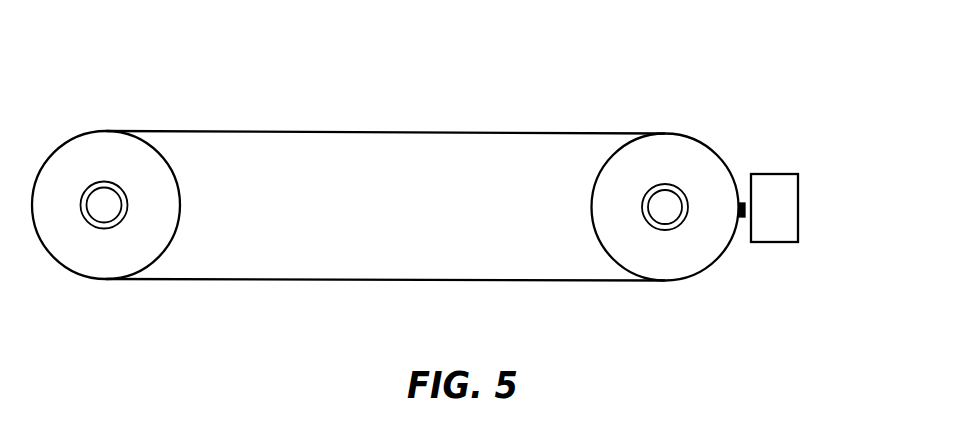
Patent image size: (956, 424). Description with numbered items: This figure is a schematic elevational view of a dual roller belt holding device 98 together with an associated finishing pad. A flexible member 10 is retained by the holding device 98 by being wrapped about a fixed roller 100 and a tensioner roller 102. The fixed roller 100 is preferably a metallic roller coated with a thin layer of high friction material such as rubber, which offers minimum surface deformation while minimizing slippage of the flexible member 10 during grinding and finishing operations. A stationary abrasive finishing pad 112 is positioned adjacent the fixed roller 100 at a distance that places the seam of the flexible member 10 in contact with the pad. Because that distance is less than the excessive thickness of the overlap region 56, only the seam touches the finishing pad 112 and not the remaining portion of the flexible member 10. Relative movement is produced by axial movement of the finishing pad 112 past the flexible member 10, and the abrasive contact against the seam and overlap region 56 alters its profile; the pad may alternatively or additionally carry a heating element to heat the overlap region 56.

The dual roller belt holding device 98 is at (576, 53).
The flexible member 10 is at (442, 132).
The tensioner roller 102 is at (100, 263).
The fixed roller 100 is at (665, 263).
The overlap region 56 is at (742, 200).
The abrasive finishing pad 112 is at (777, 173).